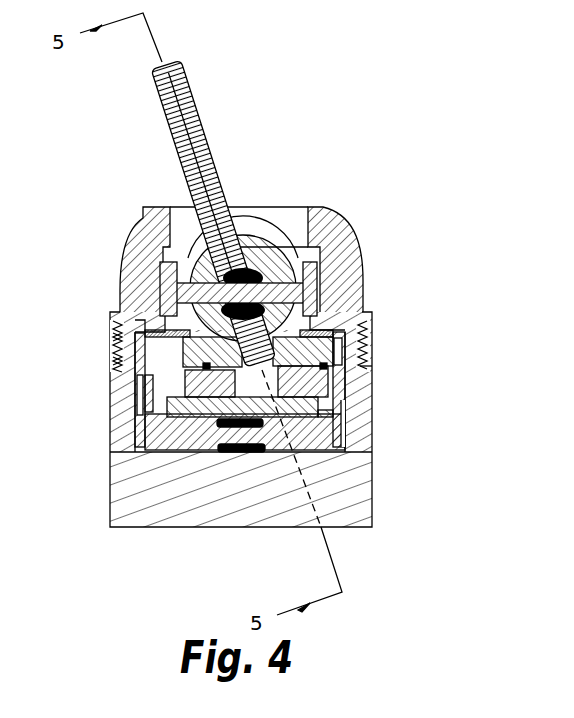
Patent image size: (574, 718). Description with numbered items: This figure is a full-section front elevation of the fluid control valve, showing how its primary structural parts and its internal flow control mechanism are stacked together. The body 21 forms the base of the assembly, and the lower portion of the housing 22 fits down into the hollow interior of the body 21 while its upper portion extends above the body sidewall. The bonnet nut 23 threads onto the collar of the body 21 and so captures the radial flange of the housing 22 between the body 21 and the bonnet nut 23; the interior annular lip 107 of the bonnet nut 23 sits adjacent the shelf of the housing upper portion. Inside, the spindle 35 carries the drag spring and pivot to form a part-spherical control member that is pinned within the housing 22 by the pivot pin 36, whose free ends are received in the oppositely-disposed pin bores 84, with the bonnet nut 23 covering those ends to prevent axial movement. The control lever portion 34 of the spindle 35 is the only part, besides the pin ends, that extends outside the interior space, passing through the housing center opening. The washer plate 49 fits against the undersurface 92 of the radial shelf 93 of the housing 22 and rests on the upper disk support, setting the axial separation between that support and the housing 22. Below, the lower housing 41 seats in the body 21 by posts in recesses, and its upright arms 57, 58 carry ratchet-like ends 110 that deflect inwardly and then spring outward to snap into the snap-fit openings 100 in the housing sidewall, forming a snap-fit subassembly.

The body 21 is at (350, 510).
The housing 22 is at (364, 304).
The bonnet nut 23 is at (142, 222).
The control lever portion 34 is at (200, 120).
The spindle 35 is at (238, 245).
The pivot pin 36 is at (338, 283).
The lower housing 41 is at (320, 465).
The washer plate 49 is at (239, 377).
The upright arm 57 is at (348, 392).
The upright arm 58 is at (133, 413).
The pin bore 84 is at (165, 262).
The undersurface 92 is at (122, 343).
The radial shelf 93 is at (158, 310).
The snap-fit opening 100 is at (113, 385).
The interior annular lip 107 is at (302, 247).
The ratchet-like end 110 is at (122, 363).